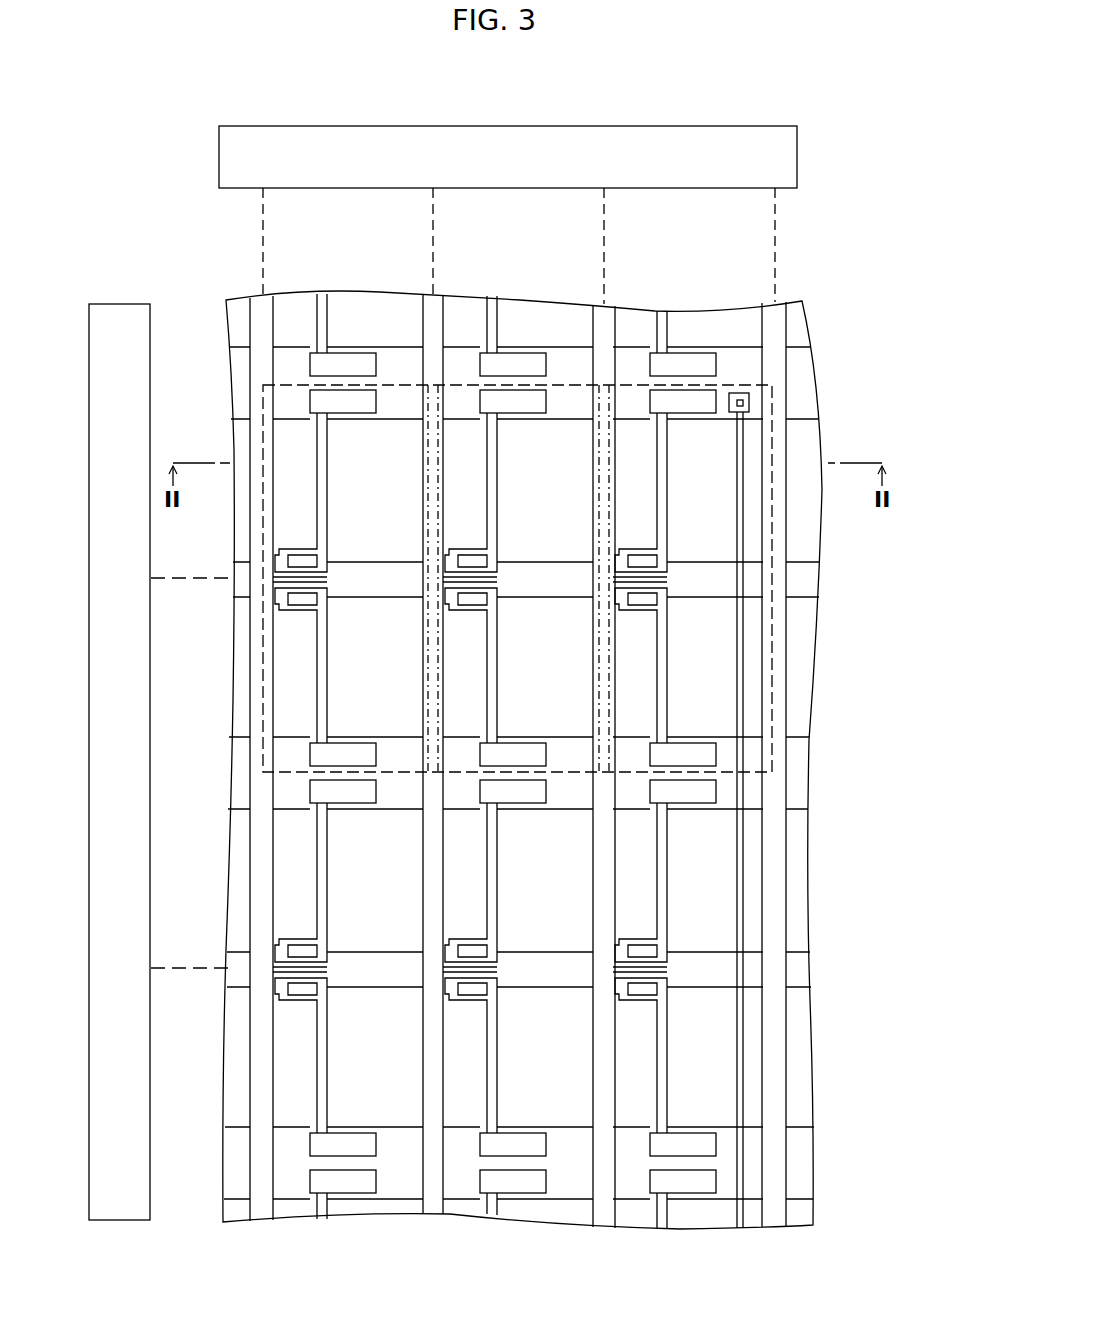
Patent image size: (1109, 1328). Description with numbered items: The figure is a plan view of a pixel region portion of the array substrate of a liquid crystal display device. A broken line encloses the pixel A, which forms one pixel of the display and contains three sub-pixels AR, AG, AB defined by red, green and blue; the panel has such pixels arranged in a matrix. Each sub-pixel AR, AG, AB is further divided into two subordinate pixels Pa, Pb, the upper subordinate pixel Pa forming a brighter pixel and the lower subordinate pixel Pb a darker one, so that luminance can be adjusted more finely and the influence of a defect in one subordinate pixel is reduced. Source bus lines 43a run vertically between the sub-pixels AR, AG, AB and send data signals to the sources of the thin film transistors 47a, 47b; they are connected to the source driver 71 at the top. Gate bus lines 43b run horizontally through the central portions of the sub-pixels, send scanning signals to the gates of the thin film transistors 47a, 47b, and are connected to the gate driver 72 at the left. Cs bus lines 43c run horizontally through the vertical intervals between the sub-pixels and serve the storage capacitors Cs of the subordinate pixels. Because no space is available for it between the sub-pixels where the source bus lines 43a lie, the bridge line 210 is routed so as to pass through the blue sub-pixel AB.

The source driver 71 is at (686, 126).
The gate driver 72 is at (88, 1178).
The source bus line 43a is at (275, 330).
The gate bus line 43b is at (233, 560).
The Cs bus line 43c is at (242, 347).
The thin film transistor 47a is at (519, 820).
The thin film transistor 47b is at (519, 713).
The bridge line 210 is at (744, 632).
The storage capacitor Cs is at (498, 773).
The subordinate pixel Pa is at (748, 527).
The subordinate pixel Pb is at (748, 687).
The pixel A is at (776, 440).
The sub-pixel AR is at (391, 774).
The sub-pixel AG is at (567, 774).
The sub-pixel AB is at (722, 774).